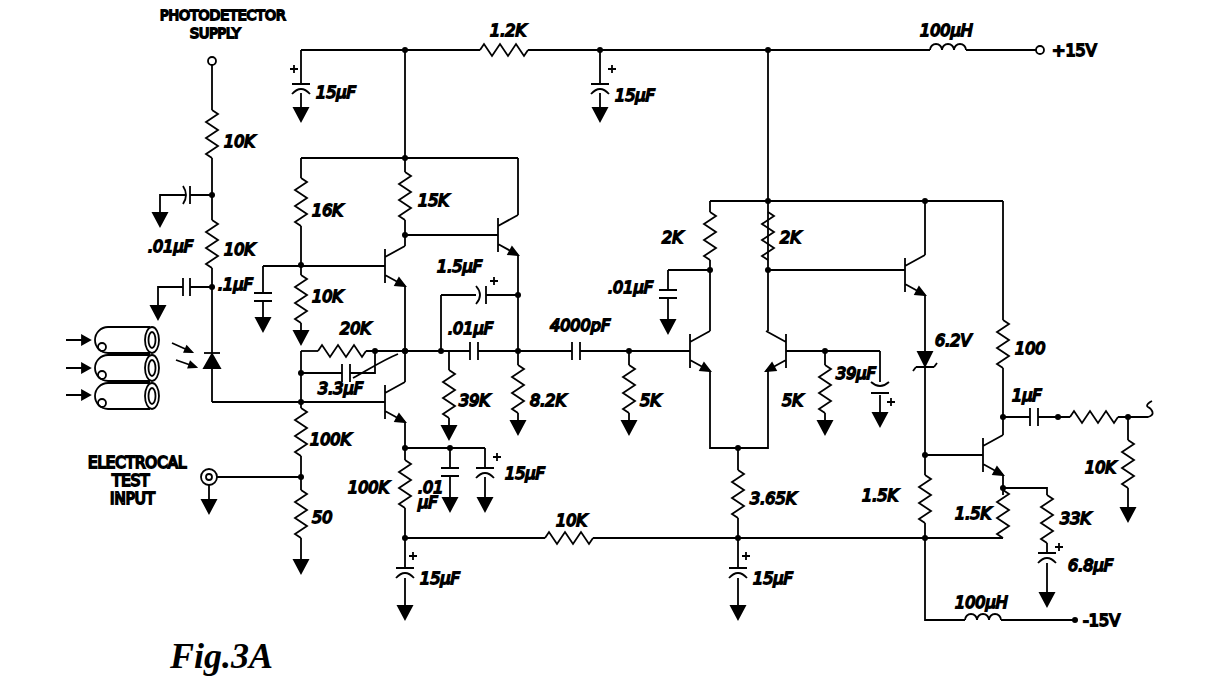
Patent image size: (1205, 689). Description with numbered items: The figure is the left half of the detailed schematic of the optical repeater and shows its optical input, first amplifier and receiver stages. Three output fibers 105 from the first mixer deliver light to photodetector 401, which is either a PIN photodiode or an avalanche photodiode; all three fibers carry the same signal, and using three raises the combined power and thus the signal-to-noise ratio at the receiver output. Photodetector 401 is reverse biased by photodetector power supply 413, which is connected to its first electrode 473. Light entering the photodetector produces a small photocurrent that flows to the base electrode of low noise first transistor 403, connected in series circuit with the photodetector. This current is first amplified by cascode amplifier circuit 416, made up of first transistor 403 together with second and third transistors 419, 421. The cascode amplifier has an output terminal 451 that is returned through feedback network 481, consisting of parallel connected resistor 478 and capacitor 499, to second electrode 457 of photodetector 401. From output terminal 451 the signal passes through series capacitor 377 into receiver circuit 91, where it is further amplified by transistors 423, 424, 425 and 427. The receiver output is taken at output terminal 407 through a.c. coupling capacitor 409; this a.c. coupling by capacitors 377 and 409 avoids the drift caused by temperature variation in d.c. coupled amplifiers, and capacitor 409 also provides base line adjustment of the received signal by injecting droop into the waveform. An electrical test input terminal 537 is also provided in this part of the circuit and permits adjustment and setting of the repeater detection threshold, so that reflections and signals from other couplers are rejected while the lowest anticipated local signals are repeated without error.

The receiver circuit 91 is at (655, 185).
The output fibers 105 is at (119, 325).
The capacitor 377 is at (583, 350).
The photodetector 401 is at (265, 398).
The low noise first transistor 403 is at (437, 413).
The output terminal 407 is at (1103, 364).
The a.c. coupling capacitor 409 is at (1058, 413).
The photodetector power supply 413 is at (179, 130).
The cascode amplifier circuit 416 is at (378, 191).
The second transistor 419 is at (433, 275).
The third transistor 421 is at (552, 245).
The transistor 423 is at (723, 360).
The transistor 424 is at (772, 360).
The transistor 425 is at (948, 283).
The transistor 427 is at (1027, 467).
The output terminal 451 is at (519, 345).
The second electrode 457 is at (210, 377).
The first electrode 473 is at (215, 354).
The resistor 478 is at (323, 346).
The feedback network 481 is at (330, 371).
The capacitor 499 is at (406, 353).
The electrical test input terminal 537 is at (200, 484).